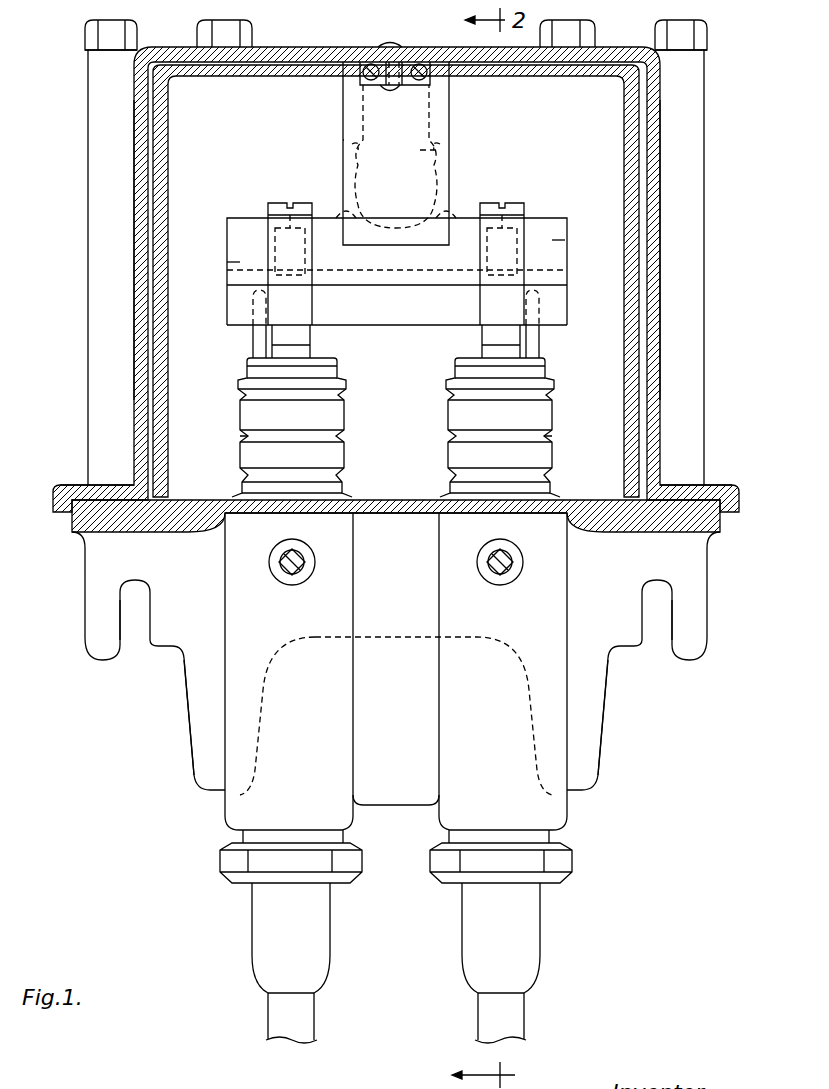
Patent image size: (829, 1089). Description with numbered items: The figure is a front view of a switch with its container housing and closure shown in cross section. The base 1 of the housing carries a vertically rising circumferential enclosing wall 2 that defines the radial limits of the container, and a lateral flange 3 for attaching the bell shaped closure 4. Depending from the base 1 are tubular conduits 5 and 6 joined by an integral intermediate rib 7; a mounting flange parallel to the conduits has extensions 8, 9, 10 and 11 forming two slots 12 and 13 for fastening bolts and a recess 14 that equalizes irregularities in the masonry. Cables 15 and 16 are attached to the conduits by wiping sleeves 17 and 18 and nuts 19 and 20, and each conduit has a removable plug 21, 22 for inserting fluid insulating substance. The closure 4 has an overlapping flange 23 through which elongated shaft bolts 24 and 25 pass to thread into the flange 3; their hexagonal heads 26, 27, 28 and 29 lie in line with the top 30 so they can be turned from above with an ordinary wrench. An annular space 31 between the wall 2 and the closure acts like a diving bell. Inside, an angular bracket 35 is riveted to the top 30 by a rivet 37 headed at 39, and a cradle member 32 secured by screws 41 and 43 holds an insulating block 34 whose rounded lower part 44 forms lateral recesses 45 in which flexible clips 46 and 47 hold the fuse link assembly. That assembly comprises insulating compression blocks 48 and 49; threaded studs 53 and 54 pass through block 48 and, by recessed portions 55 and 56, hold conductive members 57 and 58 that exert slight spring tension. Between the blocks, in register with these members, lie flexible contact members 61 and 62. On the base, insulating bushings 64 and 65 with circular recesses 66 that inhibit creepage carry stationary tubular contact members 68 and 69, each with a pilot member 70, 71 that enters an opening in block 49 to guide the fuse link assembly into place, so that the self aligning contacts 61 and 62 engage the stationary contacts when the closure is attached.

The base 1 is at (396, 514).
The enclosing wall 2 is at (165, 125).
The lateral flange 3 is at (82, 518).
The bell shaped closure 4 is at (140, 297).
The tubular conduit 5 is at (233, 800).
The tubular conduit 6 is at (562, 803).
The intermediate rib 7 is at (386, 807).
The extension 8 is at (98, 635).
The extension 9 is at (205, 765).
The extension 10 is at (592, 760).
The extension 11 is at (707, 643).
The slot 12 is at (135, 637).
The slot 13 is at (664, 640).
The recess 14 is at (400, 640).
The cable 15 is at (268, 1020).
The cable 16 is at (522, 1016).
The wiping sleeve 17 is at (255, 942).
The wiping sleeve 18 is at (530, 943).
The nut 19 is at (226, 860).
The nut 20 is at (565, 862).
The removable plug 21 is at (292, 570).
The removable plug 22 is at (500, 570).
The overlapping flange 23 is at (62, 488).
The elongated shaft bolt 24 is at (100, 232).
The elongated shaft bolt 25 is at (705, 225).
The hexagonal head 26 is at (85, 36).
The hexagonal head 27 is at (200, 30).
The hexagonal head 28 is at (583, 33).
The hexagonal head 29 is at (708, 32).
The top 30 is at (322, 56).
The annular space 31 is at (145, 156).
The cradle member 32 is at (448, 127).
The insulating block 34 is at (432, 115).
The angular bracket 35 is at (362, 82).
The rivet 37 is at (386, 50).
The rivet head 39 is at (386, 90).
The screw 41 is at (420, 64).
The screw 43 is at (368, 64).
The lower part of insulating block 44 is at (456, 192).
The lateral recess 45 is at (352, 145).
The flexible clip 46 is at (356, 178).
The flexible clip 47 is at (424, 170).
The compression block 48 is at (558, 258).
The compression block 49 is at (558, 298).
The threaded stud 53 is at (288, 222).
The threaded stud 54 is at (512, 226).
The recessed portion 55 is at (288, 205).
The recessed portion 56 is at (498, 222).
The conductive member 57 is at (268, 262).
The conductive member 58 is at (524, 241).
The flexible contact member 61 is at (295, 325).
The flexible contact member 62 is at (497, 325).
The insulating bushing 64 is at (248, 412).
The insulating bushing 65 is at (540, 412).
The circular recess 66 is at (448, 436).
The tubular contact member 68 is at (248, 370).
The tubular contact member 69 is at (545, 372).
The pilot member 70 is at (255, 345).
The pilot member 71 is at (533, 346).